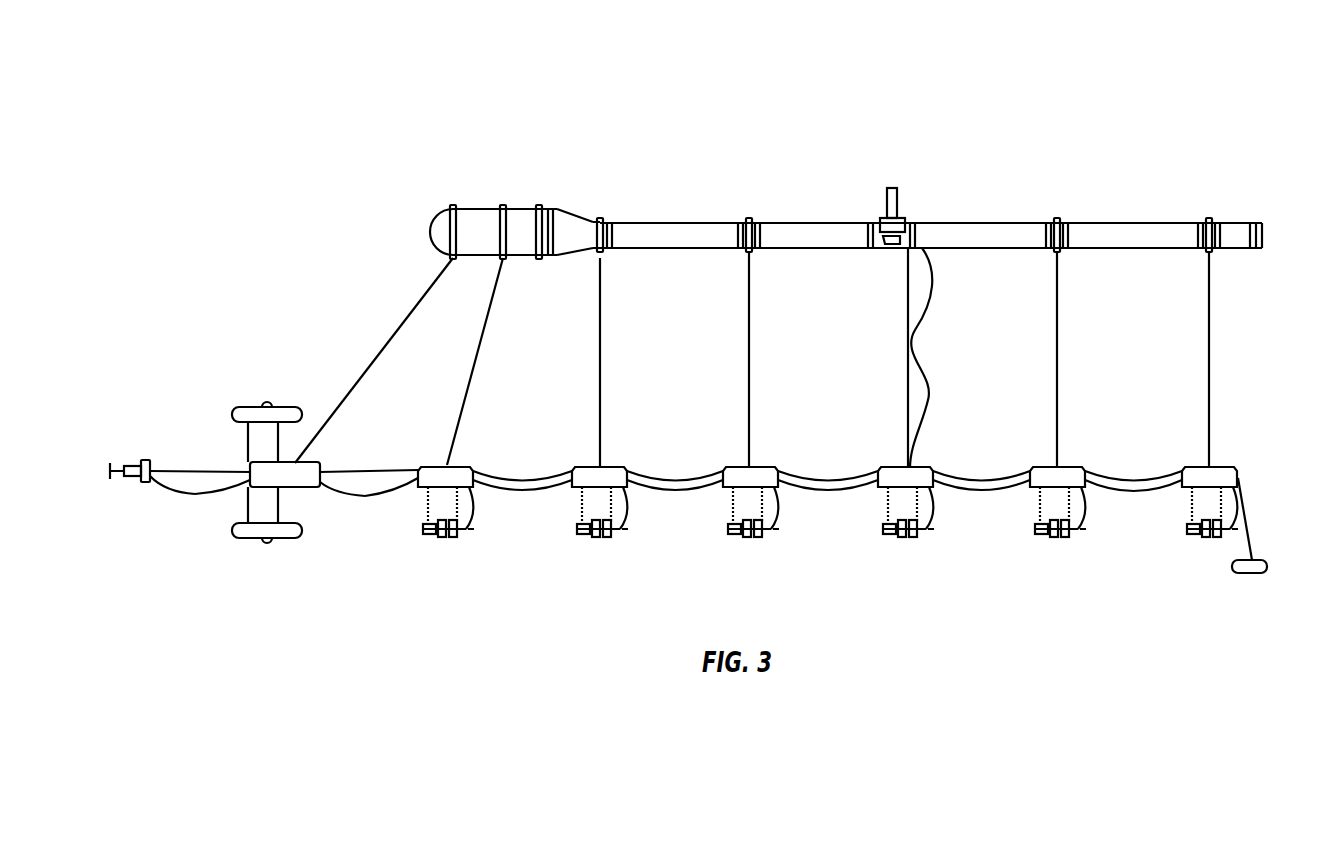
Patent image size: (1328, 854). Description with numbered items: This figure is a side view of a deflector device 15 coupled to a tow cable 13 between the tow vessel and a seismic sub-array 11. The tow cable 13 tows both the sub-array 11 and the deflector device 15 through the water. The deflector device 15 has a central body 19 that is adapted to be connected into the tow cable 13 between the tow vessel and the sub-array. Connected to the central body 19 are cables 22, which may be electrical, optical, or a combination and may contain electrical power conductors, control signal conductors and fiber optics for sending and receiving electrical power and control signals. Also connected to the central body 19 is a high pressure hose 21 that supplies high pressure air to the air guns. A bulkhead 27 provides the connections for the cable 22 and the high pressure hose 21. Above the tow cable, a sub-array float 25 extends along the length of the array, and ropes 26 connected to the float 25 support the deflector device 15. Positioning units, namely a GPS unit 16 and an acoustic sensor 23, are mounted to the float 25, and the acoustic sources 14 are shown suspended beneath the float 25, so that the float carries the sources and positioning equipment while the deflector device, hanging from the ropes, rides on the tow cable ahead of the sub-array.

The sub-array 11 is at (998, 223).
The tow cable 13 is at (213, 472).
The acoustic sources 14 is at (577, 532).
The deflector device 15 is at (258, 500).
The GPS unit 16 is at (893, 188).
The central body 19 is at (262, 470).
The high pressure hose 21 is at (160, 484).
The cables 22 is at (195, 494).
The acoustic sensor 23 is at (1257, 558).
The sub-array float 25 is at (522, 210).
The ropes 26 is at (415, 306).
The bulkhead 27 is at (143, 462).